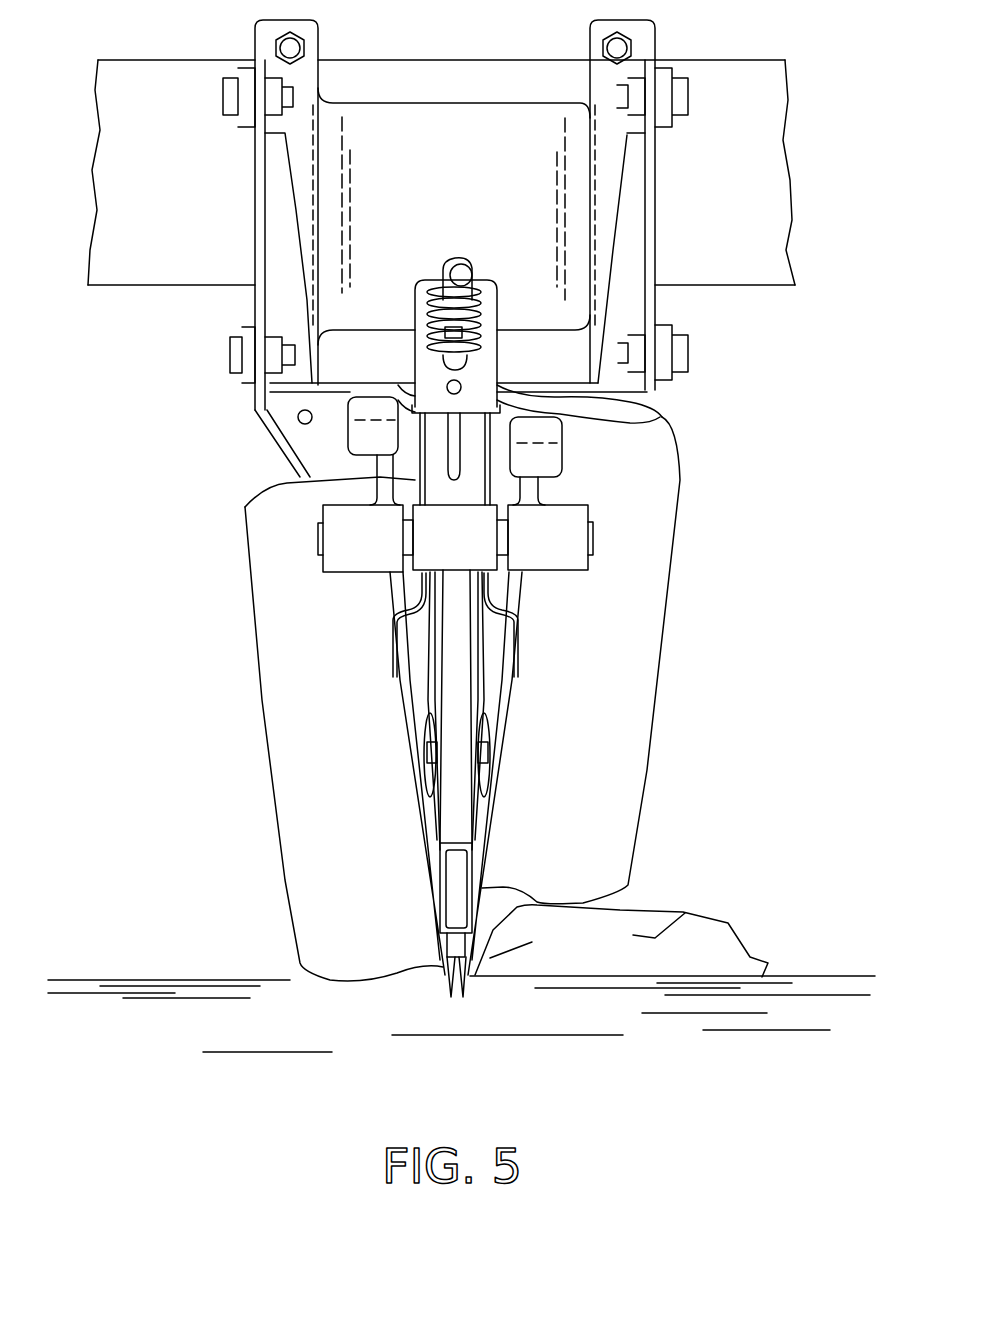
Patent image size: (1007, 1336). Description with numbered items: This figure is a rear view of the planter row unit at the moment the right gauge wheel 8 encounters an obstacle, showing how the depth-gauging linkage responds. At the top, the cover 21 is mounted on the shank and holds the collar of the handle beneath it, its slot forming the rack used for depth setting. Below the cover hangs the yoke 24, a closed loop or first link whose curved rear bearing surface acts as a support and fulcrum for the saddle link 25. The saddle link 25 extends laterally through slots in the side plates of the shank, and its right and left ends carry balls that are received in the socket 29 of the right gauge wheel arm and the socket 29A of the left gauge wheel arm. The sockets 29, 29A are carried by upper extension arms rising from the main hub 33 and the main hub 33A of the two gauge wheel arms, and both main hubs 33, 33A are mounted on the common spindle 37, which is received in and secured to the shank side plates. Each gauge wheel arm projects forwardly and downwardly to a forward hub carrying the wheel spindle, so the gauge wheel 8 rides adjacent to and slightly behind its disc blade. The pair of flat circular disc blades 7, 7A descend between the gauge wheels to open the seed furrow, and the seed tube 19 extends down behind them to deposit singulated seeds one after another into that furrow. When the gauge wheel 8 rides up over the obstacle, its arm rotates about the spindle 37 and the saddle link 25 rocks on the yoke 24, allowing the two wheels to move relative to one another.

The cover 21 is at (493, 288).
The yoke 24 is at (452, 462).
The saddle link 25 is at (667, 417).
The socket 29 is at (557, 458).
The socket 29A is at (358, 440).
The depth gauge wheel 8 is at (613, 712).
The main hub 33 is at (553, 557).
The main hub 33A is at (350, 562).
The common spindle 37 is at (593, 537).
The seed tube 19 is at (458, 827).
The disc blade 7 is at (470, 987).
The disc blade 7A is at (445, 987).